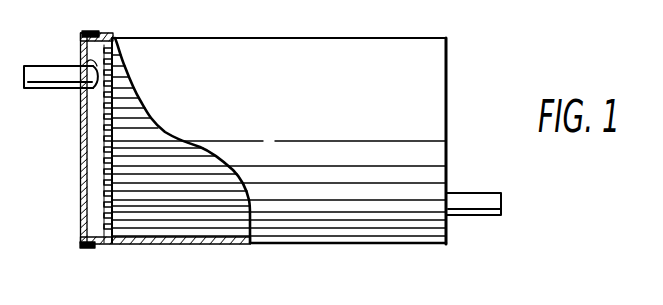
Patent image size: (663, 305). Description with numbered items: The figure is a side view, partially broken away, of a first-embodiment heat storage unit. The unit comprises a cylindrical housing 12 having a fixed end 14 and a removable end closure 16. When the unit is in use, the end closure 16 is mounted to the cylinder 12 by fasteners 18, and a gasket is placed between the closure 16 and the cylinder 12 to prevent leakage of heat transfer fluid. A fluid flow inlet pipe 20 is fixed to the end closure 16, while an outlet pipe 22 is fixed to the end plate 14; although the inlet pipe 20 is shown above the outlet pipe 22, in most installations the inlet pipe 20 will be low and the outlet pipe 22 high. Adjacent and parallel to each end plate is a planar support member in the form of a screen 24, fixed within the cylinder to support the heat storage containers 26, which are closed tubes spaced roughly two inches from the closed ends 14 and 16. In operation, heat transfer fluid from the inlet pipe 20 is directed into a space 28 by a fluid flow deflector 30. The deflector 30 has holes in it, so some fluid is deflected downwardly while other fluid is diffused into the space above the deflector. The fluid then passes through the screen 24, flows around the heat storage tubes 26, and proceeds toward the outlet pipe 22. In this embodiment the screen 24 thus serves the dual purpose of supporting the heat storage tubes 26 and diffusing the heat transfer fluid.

The cylindrical housing 12 is at (310, 52).
The fixed end 14 is at (447, 96).
The removable end closure 16 is at (81, 127).
The fasteners 18 is at (99, 24).
The fluid flow inlet pipe 20 is at (43, 75).
The outlet pipe 22 is at (497, 177).
The screen 24 is at (118, 212).
The heat storage containers 26 is at (170, 208).
The space 28 is at (89, 157).
The fluid flow deflector 30 is at (82, 63).